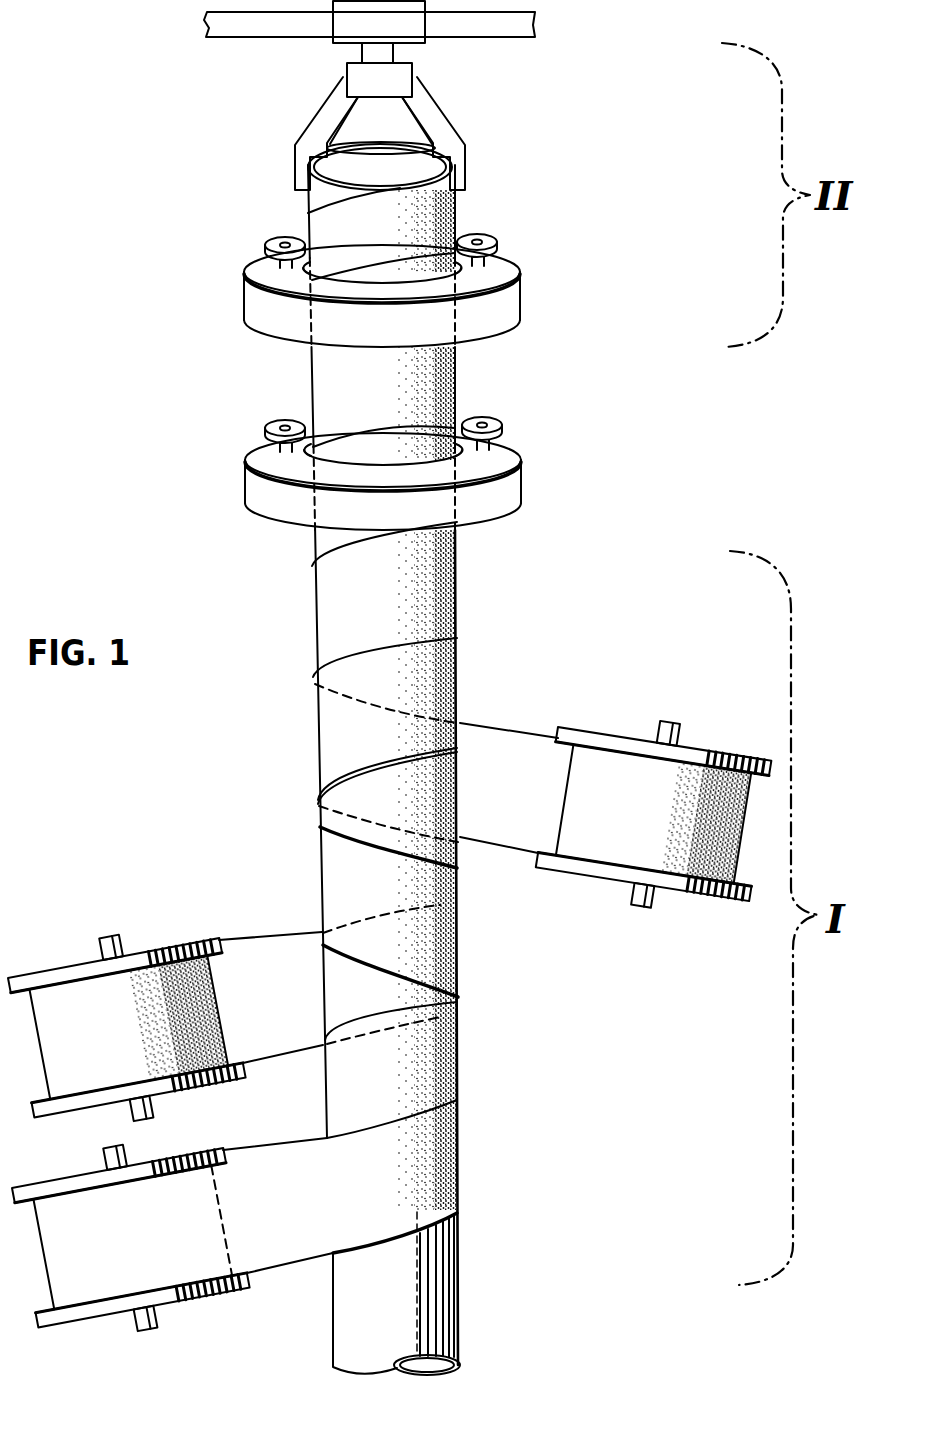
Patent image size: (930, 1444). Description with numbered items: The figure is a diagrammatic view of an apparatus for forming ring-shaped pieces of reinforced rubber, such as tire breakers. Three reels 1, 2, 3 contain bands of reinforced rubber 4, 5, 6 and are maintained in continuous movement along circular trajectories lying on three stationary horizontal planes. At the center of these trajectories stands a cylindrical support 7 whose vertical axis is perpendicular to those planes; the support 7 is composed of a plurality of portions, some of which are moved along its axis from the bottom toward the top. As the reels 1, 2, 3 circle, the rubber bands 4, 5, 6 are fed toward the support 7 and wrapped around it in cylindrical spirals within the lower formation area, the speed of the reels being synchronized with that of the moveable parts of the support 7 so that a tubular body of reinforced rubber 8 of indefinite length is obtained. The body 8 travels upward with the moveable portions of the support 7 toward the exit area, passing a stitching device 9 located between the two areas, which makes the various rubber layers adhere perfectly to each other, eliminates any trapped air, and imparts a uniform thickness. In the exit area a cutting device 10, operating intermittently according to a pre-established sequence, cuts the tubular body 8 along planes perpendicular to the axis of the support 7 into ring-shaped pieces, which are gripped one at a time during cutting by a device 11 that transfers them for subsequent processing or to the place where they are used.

The reel 1 is at (78, 1315).
The reel 2 is at (60, 975).
The reel 3 is at (707, 752).
The band of reinforced rubber 4 is at (292, 1252).
The band of reinforced rubber 5 is at (282, 948).
The band of reinforced rubber 6 is at (492, 745).
The cylindrical support 7 is at (445, 1288).
The tubular body of reinforced rubber 8 is at (325, 600).
The stitching device 9 is at (519, 432).
The cutting device 10 is at (276, 232).
The gripping and transfer device 11 is at (312, 112).